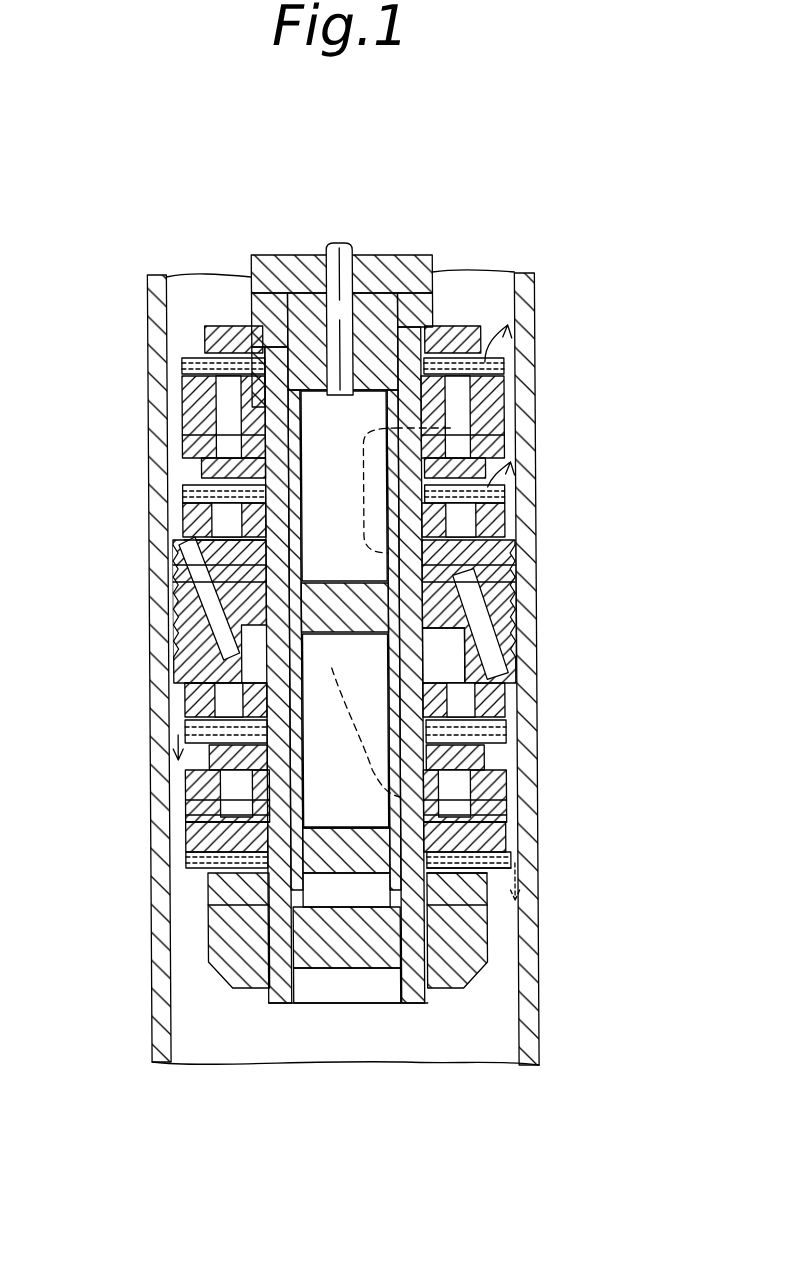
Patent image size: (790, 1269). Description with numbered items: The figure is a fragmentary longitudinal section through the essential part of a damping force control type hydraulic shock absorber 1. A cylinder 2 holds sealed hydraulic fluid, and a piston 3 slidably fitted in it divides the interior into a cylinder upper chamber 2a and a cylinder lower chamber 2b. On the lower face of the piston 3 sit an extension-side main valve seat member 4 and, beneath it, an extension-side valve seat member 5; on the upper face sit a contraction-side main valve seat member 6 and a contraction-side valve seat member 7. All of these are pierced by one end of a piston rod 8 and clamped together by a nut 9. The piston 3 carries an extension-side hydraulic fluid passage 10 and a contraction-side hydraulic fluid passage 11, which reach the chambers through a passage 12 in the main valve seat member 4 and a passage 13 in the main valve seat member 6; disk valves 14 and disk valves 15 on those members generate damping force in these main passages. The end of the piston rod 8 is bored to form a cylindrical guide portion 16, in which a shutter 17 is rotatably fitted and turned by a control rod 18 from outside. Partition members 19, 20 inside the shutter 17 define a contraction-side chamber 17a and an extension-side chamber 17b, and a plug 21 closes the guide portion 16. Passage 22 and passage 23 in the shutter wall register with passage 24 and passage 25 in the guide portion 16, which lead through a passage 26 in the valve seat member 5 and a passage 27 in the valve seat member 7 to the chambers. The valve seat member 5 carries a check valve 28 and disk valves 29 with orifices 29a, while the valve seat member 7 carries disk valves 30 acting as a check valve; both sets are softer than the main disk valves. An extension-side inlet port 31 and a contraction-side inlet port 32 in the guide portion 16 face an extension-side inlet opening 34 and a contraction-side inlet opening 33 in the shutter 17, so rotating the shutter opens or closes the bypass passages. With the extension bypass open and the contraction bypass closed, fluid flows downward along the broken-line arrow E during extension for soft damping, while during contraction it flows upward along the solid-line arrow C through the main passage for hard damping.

The damping force control type hydraulic shock absorber 1 is at (470, 168).
The cylinder 2 is at (524, 272).
The cylinder upper chamber 2a is at (458, 290).
The cylinder lower chamber 2b is at (450, 1045).
The piston 3 is at (518, 610).
The extension-side main valve seat member 4 is at (508, 712).
The extension-side valve seat member 5 is at (500, 822).
The contraction-side main valve seat member 6 is at (502, 522).
The contraction-side valve seat member 7 is at (457, 430).
The piston rod 8 is at (282, 255).
The nut 9 is at (238, 976).
The extension-side hydraulic fluid passage 10 is at (195, 590).
The contraction-side hydraulic fluid passage 11 is at (497, 660).
The passage 12 is at (265, 720).
The passage 13 is at (503, 503).
The disk valves 14 is at (320, 775).
The disk valves 15 is at (505, 458).
The guide portion 16 is at (292, 1003).
The shutter 17 is at (378, 293).
The contraction-side chamber 17a is at (310, 447).
The extension-side chamber 17b is at (330, 800).
The control rod 18 is at (341, 258).
The partition member 19 is at (330, 608).
The partition member 20 is at (381, 990).
The plug 21 is at (331, 970).
The passage 22 is at (470, 407).
The passage 23 is at (462, 793).
The passage 24 is at (480, 460).
The passage 25 is at (470, 820).
The passage 26 is at (475, 800).
The passage 27 is at (470, 440).
The check valve 28 is at (520, 860).
The disk valves 29 is at (487, 870).
The orifices 29a is at (520, 860).
The disk valves 30 is at (512, 310).
The extension-side inlet port 31 is at (245, 680).
The contraction-side inlet port 32 is at (503, 575).
The contraction-side inlet opening 33 is at (515, 560).
The extension-side inlet opening 34 is at (270, 662).
The solid-line arrow C is at (497, 667).
The broken-line arrow E is at (205, 555).